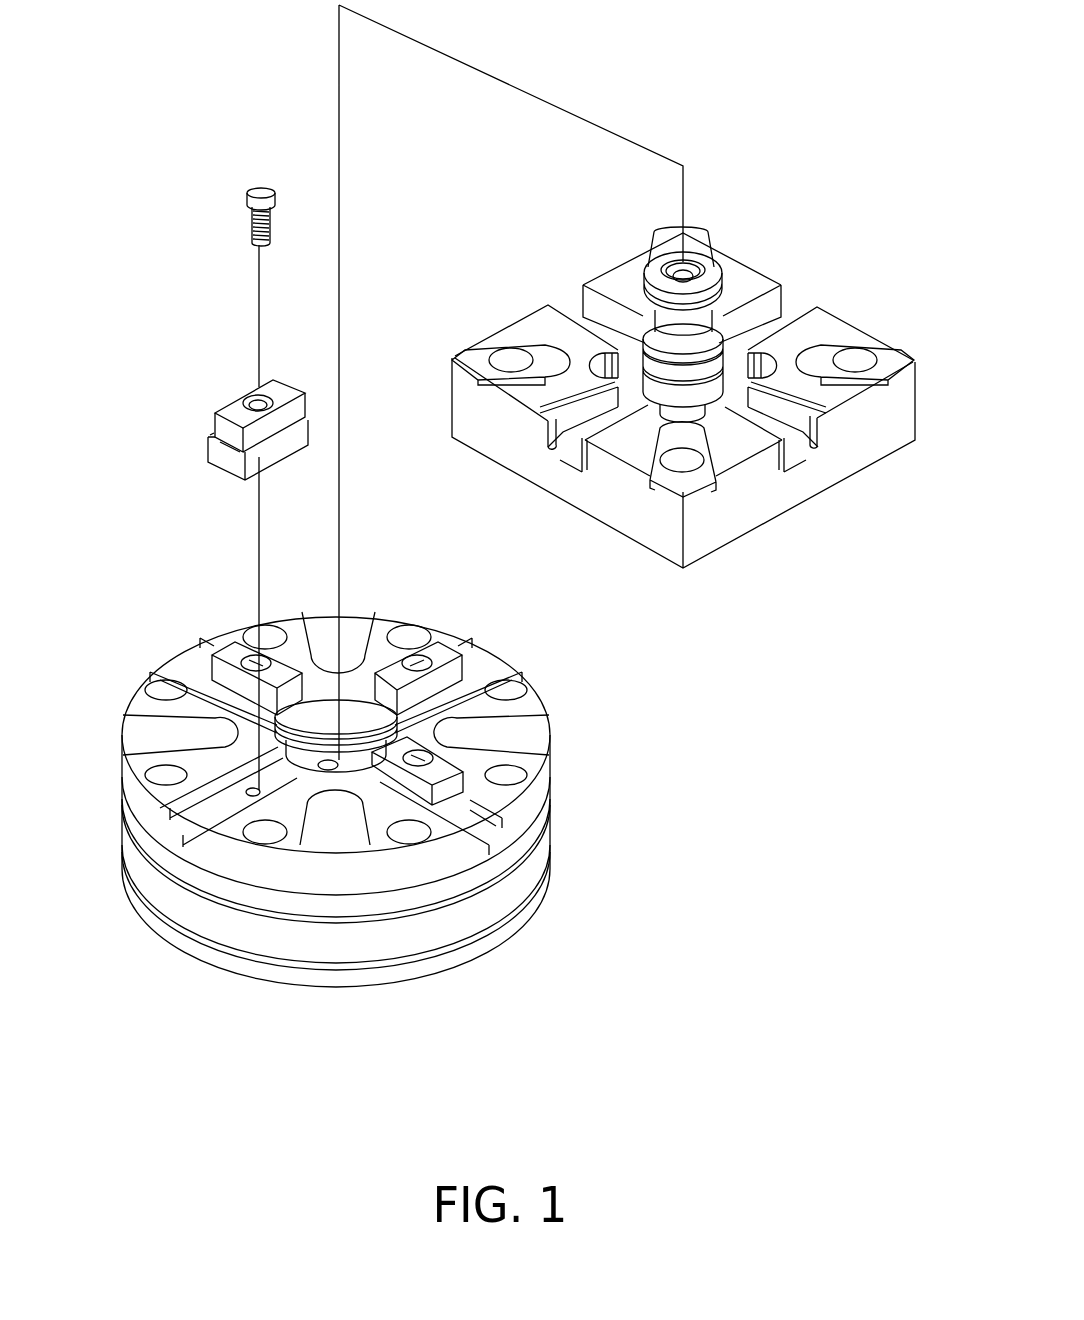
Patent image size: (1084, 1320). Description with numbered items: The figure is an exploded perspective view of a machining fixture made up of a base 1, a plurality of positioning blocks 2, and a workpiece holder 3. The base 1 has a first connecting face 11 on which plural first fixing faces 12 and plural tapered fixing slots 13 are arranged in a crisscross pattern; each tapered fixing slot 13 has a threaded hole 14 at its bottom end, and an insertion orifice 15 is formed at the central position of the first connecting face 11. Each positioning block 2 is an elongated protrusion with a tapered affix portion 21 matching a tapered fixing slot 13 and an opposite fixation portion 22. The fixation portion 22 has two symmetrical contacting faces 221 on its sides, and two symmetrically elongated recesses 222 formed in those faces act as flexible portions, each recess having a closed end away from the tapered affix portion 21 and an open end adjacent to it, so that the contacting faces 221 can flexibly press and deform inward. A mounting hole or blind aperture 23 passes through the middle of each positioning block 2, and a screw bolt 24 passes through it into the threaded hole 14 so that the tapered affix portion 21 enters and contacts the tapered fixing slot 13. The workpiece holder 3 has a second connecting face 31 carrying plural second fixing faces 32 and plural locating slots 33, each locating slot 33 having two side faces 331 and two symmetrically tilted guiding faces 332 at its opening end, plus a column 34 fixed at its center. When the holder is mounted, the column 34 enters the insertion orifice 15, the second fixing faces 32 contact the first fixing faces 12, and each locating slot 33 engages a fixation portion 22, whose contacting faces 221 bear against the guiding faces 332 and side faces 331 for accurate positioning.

The base 1 is at (535, 822).
The first connecting face 11 is at (377, 808).
The first fixing face 12 is at (330, 827).
The tapered fixing slot 13 is at (200, 813).
The threaded hole 14 is at (253, 797).
The insertion orifice 15 is at (355, 742).
The positioning block 2 is at (216, 433).
The tapered affix portion 21 is at (222, 440).
The fixation portion 22 is at (228, 428).
The contacting face 221 is at (268, 423).
The elongated recess 222 is at (210, 428).
The mounting hole or blind aperture 23 is at (277, 356).
The screw bolt 24 is at (250, 213).
The workpiece holder 3 is at (652, 398).
The second connecting face 31 is at (565, 330).
The second fixing face 32 is at (543, 358).
The locating slot 33 is at (608, 494).
The side face 331 is at (568, 433).
The tilted guiding face 332 is at (560, 420).
The column 34 is at (728, 292).